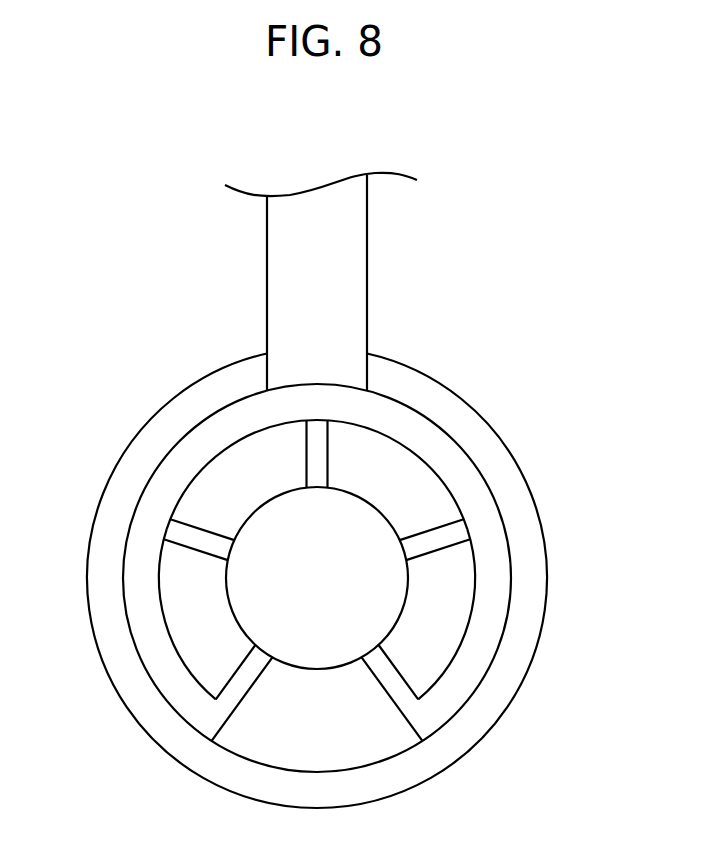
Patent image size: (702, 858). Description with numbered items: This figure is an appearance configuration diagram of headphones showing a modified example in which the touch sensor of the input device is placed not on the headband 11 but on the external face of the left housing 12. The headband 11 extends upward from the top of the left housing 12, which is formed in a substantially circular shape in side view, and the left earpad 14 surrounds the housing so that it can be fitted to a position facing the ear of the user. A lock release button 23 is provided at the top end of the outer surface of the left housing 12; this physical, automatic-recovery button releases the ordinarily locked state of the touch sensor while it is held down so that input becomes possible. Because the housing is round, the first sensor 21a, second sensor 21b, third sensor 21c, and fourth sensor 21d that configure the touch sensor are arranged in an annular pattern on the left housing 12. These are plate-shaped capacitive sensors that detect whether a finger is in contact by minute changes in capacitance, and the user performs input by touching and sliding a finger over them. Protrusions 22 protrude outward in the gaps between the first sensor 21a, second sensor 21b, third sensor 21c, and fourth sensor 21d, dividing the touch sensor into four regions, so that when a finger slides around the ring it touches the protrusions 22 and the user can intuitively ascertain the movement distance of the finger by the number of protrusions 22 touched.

The headband 11 is at (368, 285).
The left housing 12 is at (191, 726).
The left earpad 14 is at (88, 561).
The lock release button 23 is at (289, 606).
The protrusions 22 is at (314, 457).
The first sensor 21a is at (163, 623).
The second sensor 21b is at (203, 467).
The third sensor 21c is at (427, 458).
The fourth sensor 21d is at (468, 632).